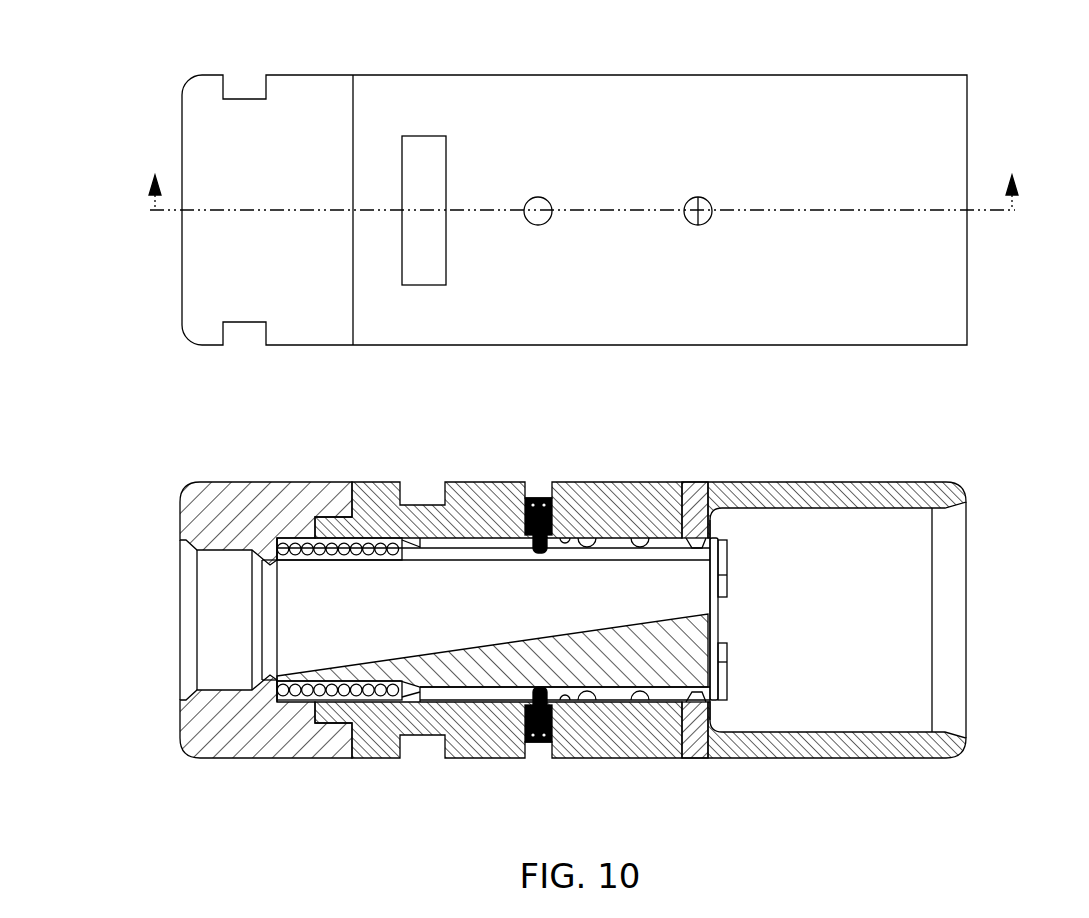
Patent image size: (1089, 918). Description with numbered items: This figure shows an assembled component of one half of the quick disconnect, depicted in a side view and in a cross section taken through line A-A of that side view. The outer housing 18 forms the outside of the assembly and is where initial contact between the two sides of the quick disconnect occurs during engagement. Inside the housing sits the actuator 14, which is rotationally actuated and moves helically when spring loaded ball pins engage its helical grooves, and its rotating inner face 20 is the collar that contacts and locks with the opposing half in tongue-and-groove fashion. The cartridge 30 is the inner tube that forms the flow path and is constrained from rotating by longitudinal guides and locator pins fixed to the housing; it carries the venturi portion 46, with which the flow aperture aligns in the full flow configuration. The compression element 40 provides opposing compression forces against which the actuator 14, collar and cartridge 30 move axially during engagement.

The outer housing 18 is at (785, 108).
The actuator 14 is at (665, 540).
The inner face 20 is at (730, 562).
The cartridge 30 is at (495, 655).
The compression element 40 is at (305, 690).
The venturi portion 46 is at (325, 599).